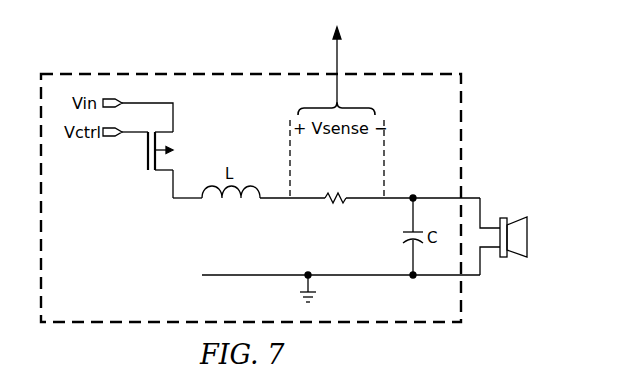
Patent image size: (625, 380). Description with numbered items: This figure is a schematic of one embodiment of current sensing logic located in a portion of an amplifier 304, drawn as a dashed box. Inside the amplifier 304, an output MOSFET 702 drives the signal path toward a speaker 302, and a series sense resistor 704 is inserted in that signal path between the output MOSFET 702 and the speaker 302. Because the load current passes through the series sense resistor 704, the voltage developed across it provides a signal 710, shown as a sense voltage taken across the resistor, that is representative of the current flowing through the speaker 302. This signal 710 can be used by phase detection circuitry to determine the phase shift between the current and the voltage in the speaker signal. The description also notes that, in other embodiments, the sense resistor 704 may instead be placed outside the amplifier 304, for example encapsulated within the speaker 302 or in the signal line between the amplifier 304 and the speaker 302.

The speaker 302 is at (528, 236).
The amplifier 304 is at (137, 273).
The output MOSFET 702 is at (146, 159).
The series sense resistor 704 is at (335, 208).
The signal 710 is at (339, 55).